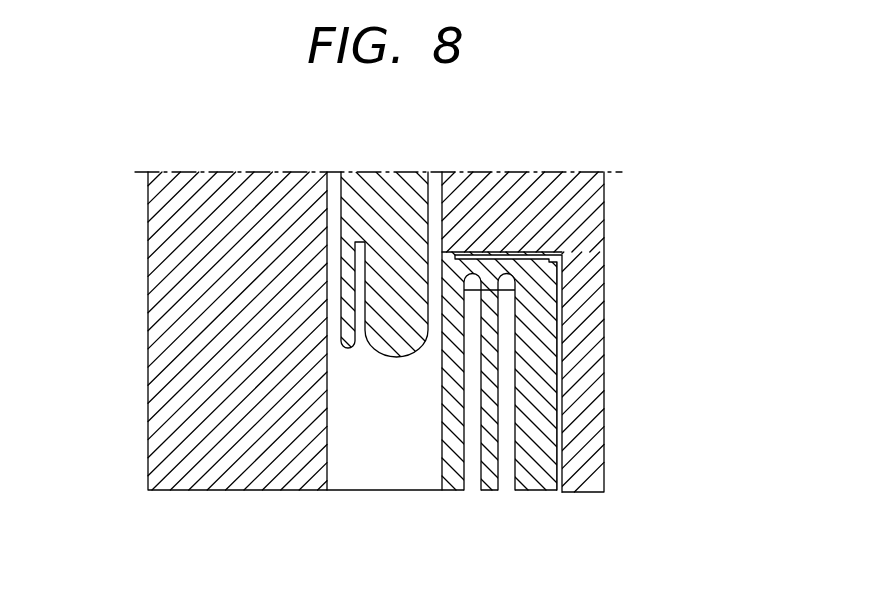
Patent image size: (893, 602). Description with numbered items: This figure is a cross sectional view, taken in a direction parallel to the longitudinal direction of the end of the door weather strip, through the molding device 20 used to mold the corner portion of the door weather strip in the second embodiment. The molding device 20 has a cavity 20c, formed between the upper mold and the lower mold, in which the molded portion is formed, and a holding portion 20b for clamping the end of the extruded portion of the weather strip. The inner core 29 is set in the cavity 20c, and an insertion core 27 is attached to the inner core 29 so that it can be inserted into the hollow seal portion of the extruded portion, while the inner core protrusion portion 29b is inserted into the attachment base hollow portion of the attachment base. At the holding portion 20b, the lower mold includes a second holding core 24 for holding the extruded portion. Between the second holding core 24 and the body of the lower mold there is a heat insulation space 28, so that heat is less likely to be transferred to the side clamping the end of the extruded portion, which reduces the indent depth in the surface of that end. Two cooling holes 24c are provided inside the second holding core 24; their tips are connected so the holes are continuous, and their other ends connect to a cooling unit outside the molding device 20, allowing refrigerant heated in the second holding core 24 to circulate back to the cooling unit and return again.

The molding device 20 is at (619, 200).
The holding portion 20b is at (327, 292).
The cavity 20c is at (330, 192).
The second holding core 24 is at (540, 323).
The cooling holes 24c is at (508, 415).
The insertion core 27 is at (397, 343).
The heat insulation space 28 is at (503, 256).
The inner core 29 is at (378, 191).
The inner core protrusion portion 29b is at (343, 345).